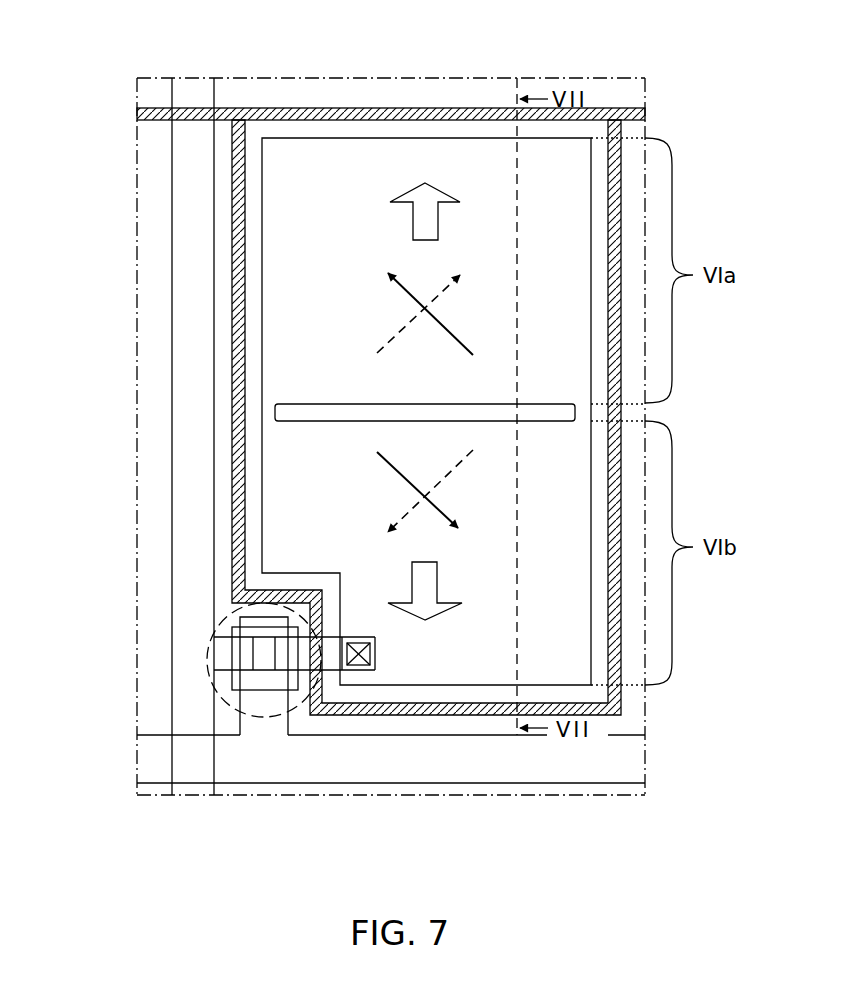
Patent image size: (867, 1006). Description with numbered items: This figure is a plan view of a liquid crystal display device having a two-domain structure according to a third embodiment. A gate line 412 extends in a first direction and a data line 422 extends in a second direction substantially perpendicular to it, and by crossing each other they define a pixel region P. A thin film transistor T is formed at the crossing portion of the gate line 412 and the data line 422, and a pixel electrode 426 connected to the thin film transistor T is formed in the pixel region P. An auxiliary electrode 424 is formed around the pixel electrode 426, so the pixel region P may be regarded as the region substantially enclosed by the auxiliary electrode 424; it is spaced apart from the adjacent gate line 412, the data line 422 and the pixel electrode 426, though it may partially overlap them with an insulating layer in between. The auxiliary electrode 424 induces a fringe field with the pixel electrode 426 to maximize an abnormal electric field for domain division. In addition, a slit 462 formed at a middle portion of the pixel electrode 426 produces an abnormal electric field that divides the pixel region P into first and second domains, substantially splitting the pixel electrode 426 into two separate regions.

The gate line 412 is at (380, 758).
The data line 422 is at (185, 462).
The auxiliary electrode 424 is at (308, 108).
The pixel electrode 426 is at (260, 243).
The slit 462 is at (542, 415).
The pixel region P is at (252, 328).
The thin film transistor T is at (264, 718).